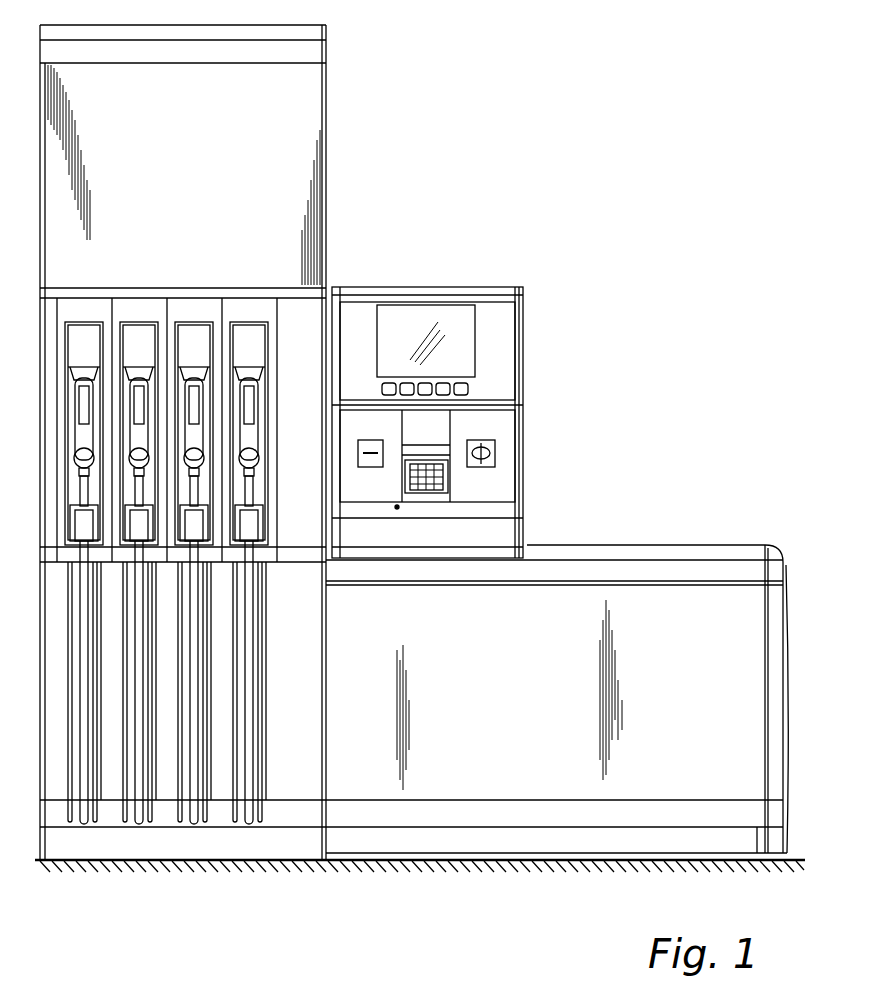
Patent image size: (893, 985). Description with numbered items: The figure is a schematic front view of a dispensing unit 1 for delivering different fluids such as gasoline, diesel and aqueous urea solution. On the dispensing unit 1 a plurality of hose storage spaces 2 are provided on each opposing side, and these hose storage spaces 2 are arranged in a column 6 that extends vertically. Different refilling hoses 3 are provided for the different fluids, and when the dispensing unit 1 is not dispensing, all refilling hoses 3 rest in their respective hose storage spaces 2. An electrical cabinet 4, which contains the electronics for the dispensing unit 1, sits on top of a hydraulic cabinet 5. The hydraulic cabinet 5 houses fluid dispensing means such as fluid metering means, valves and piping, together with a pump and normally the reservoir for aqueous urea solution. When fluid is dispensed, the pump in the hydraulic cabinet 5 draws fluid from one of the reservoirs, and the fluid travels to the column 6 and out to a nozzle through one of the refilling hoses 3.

The dispensing unit 1 is at (598, 88).
The hose storage spaces 2 is at (249, 352).
The refilling hoses 3 is at (248, 771).
The electrical cabinet 4 is at (523, 402).
The hydraulic cabinet 5 is at (787, 632).
The column 6 is at (326, 148).